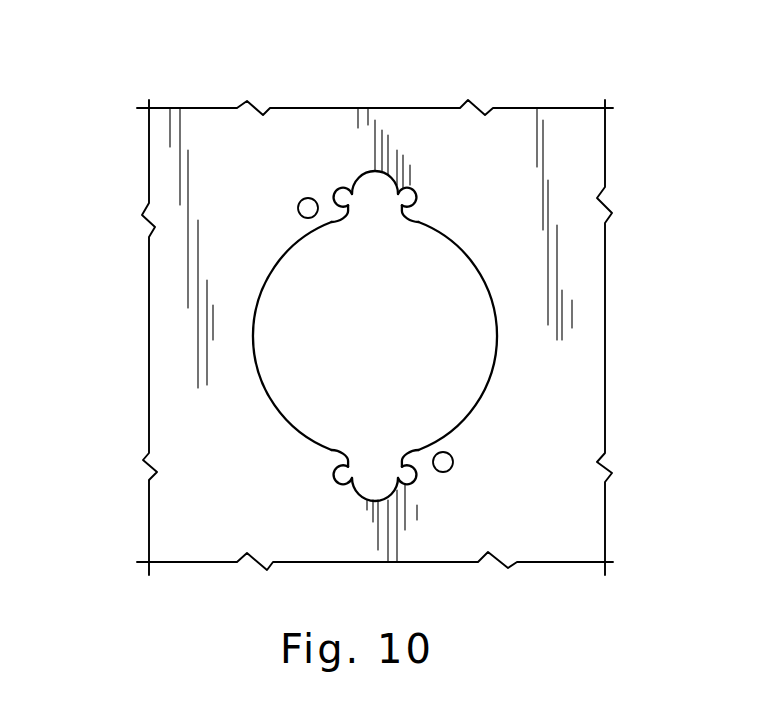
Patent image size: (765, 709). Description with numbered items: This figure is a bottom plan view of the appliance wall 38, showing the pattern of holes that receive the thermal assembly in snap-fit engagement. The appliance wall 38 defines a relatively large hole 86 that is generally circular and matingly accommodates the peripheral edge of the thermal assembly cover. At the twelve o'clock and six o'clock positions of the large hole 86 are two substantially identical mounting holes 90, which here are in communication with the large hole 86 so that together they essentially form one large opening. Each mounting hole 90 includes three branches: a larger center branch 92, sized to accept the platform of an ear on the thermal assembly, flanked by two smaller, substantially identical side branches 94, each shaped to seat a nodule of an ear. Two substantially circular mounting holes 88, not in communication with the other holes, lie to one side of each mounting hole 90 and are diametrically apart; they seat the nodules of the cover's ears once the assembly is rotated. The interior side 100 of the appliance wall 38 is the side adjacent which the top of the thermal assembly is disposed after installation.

The appliance wall 38 is at (200, 420).
The large hole 86 is at (468, 252).
The mounting holes 88 is at (298, 207).
The mounting holes 90 is at (357, 178).
The center branch 92 is at (361, 172).
The side branches 94 is at (333, 190).
The interior side 100 is at (214, 533).